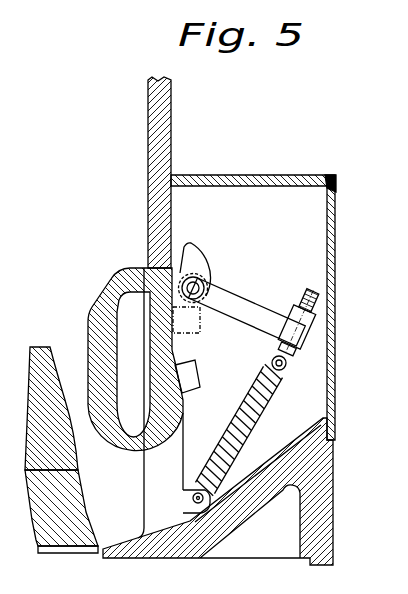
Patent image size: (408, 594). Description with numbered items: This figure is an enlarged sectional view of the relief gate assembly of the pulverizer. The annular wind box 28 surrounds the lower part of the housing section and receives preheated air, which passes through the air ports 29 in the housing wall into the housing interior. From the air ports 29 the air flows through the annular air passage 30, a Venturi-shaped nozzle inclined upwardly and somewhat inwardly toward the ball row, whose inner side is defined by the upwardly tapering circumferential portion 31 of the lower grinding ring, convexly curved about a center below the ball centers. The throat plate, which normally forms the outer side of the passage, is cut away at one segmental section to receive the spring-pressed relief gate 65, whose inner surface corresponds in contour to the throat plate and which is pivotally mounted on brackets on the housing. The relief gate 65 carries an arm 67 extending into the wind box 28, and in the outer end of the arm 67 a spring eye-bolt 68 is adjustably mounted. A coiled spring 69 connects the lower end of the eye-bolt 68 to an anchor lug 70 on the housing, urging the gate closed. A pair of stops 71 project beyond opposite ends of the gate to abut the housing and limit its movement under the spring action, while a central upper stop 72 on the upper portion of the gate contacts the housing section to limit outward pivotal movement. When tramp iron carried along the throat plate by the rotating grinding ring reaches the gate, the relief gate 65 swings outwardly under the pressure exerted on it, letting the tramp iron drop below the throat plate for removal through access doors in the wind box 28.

The annular wind box 28 is at (338, 257).
The air ports 29 is at (168, 512).
The annular air passage 30 is at (85, 423).
The upwardly tapering circumferential portion of the lower grinding ring 31 is at (68, 358).
The spring-pressed relief gate 65 is at (108, 292).
The arm 67 is at (232, 298).
The spring eye-bolt 68 is at (310, 297).
The coiled spring 69 is at (266, 410).
The anchor lug 70 is at (207, 505).
The stops 71 is at (193, 373).
The central upper stop 72 is at (200, 250).